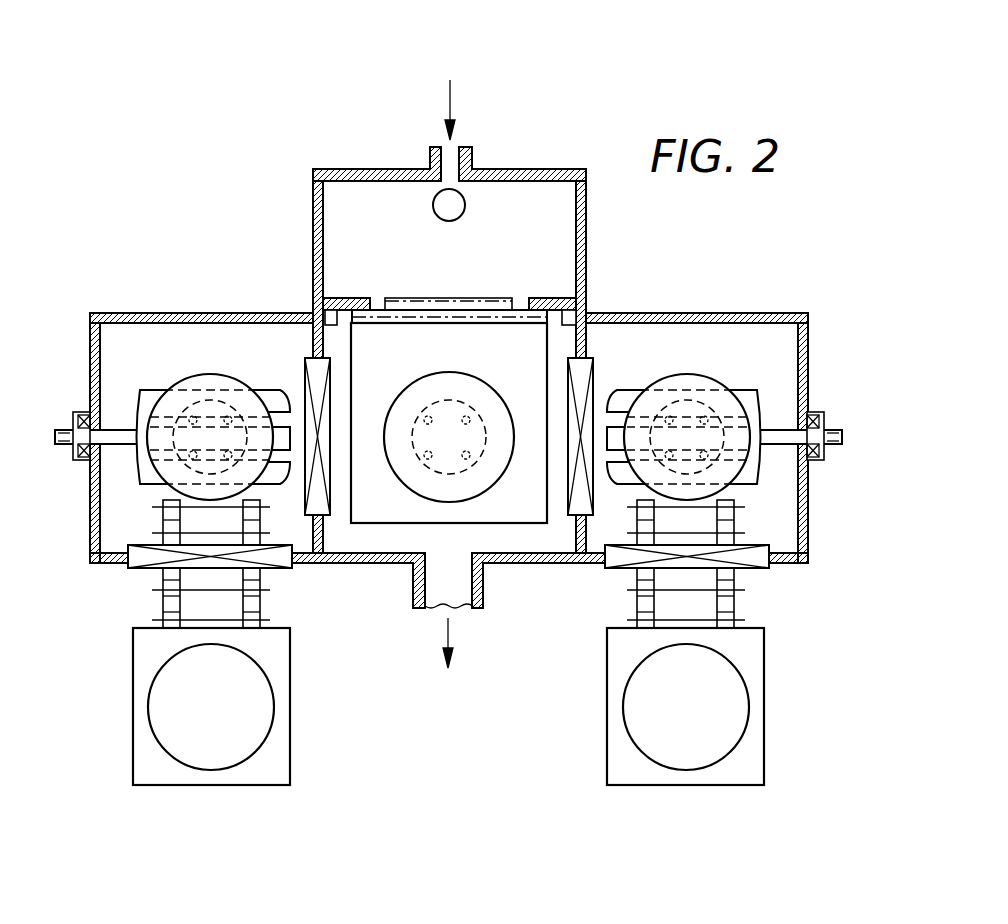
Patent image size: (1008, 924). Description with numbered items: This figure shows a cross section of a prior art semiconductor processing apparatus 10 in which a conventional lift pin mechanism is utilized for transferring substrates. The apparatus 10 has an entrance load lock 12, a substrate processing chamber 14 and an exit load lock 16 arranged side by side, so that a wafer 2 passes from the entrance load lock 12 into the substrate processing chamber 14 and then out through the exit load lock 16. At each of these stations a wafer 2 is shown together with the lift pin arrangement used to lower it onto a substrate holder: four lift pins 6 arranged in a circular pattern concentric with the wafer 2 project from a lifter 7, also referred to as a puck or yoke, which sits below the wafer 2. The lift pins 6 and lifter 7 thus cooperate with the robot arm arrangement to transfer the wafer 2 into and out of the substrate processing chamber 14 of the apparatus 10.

The wafer 2 is at (209, 378).
The lift pins 6 is at (232, 402).
The lifter 7 is at (470, 460).
The semiconductor processing apparatus 10 is at (256, 219).
The entrance load lock 12 is at (94, 586).
The substrate processing chamber 14 is at (504, 584).
The exit load lock 16 is at (804, 586).